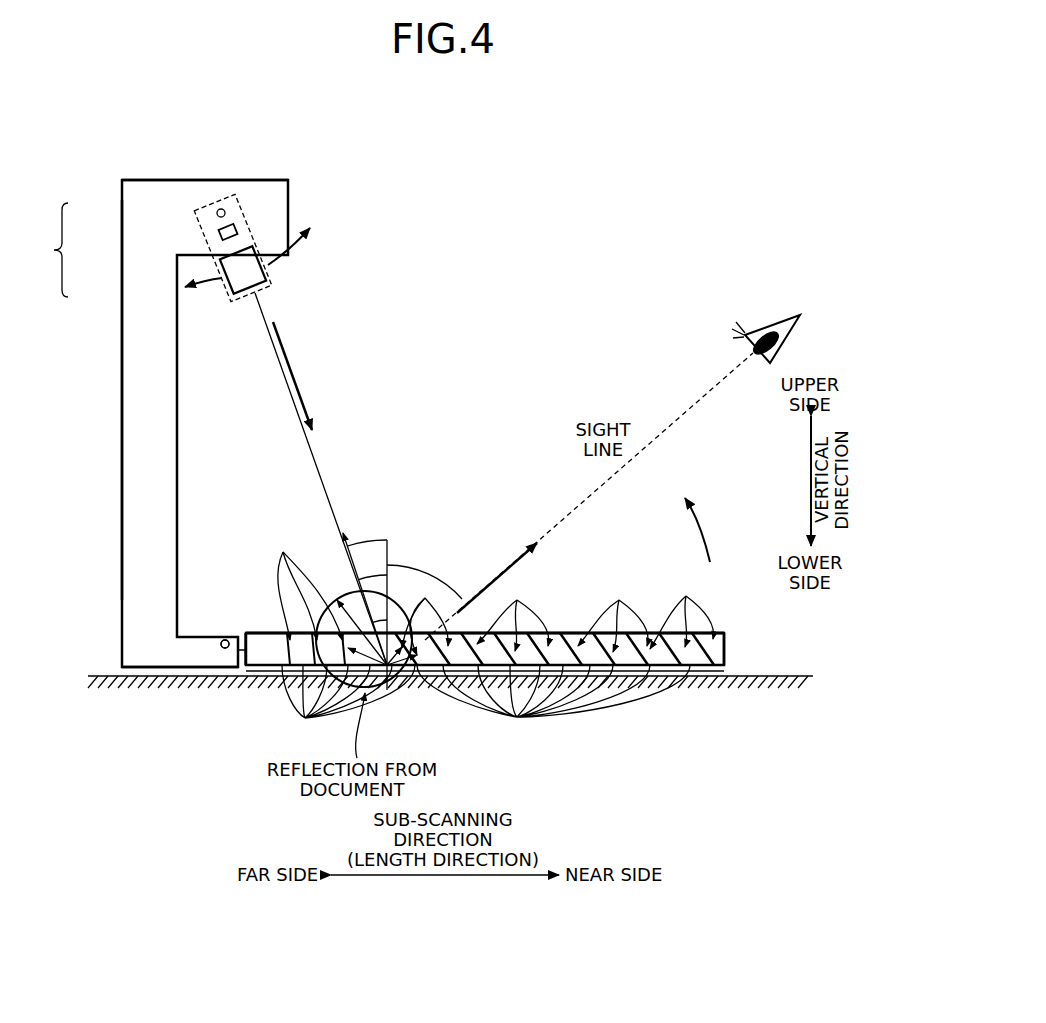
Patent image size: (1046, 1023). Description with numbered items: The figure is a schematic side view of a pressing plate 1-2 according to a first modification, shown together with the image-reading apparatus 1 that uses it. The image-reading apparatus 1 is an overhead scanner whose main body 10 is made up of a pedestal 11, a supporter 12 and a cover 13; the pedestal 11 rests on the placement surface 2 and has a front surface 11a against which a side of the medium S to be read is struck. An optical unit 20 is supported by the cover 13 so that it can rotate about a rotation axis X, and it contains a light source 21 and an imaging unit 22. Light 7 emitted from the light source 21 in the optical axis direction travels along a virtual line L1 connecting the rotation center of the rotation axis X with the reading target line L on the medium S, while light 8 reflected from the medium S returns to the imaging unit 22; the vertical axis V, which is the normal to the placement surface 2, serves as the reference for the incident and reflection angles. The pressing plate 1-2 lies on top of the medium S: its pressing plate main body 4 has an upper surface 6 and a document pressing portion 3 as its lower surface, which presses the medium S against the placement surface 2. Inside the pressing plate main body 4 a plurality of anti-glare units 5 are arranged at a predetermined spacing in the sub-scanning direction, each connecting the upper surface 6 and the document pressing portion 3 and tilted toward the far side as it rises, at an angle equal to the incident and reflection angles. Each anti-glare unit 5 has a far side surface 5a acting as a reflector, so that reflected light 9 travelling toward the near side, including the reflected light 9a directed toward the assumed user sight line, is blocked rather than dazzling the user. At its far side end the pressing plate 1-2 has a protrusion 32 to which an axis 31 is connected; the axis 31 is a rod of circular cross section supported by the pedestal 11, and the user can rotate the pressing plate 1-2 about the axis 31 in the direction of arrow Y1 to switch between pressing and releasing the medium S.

The image-reading apparatus 1 is at (131, 143).
The main body 10 is at (47, 250).
The pedestal 11 is at (122, 660).
The front surface 11a is at (250, 655).
The supporter 12 is at (122, 246).
The cover 13 is at (168, 180).
The optical unit 20 is at (270, 283).
The light source 21 is at (258, 250).
The imaging unit 22 is at (236, 228).
The rotation axis X is at (221, 209).
The virtual line L1 is at (308, 447).
The light 7 is at (290, 367).
The light 8 is at (345, 533).
The vertical axis V is at (389, 540).
The reflected light 9 is at (393, 682).
The reflected light 9a is at (523, 562).
The reading target line L is at (385, 684).
The arrow Y1 is at (709, 530).
The placement surface 2 is at (783, 676).
The document pressing portion 3 is at (607, 667).
The pressing plate main body 4 is at (653, 625).
The anti-glare unit 5 is at (495, 592).
The far side surface 5a is at (486, 703).
The upper surface 6 is at (550, 632).
The medium to be read S is at (720, 670).
The pressing plate 1-2 is at (732, 626).
The axis 31 is at (225, 640).
The protrusion 32 is at (221, 645).